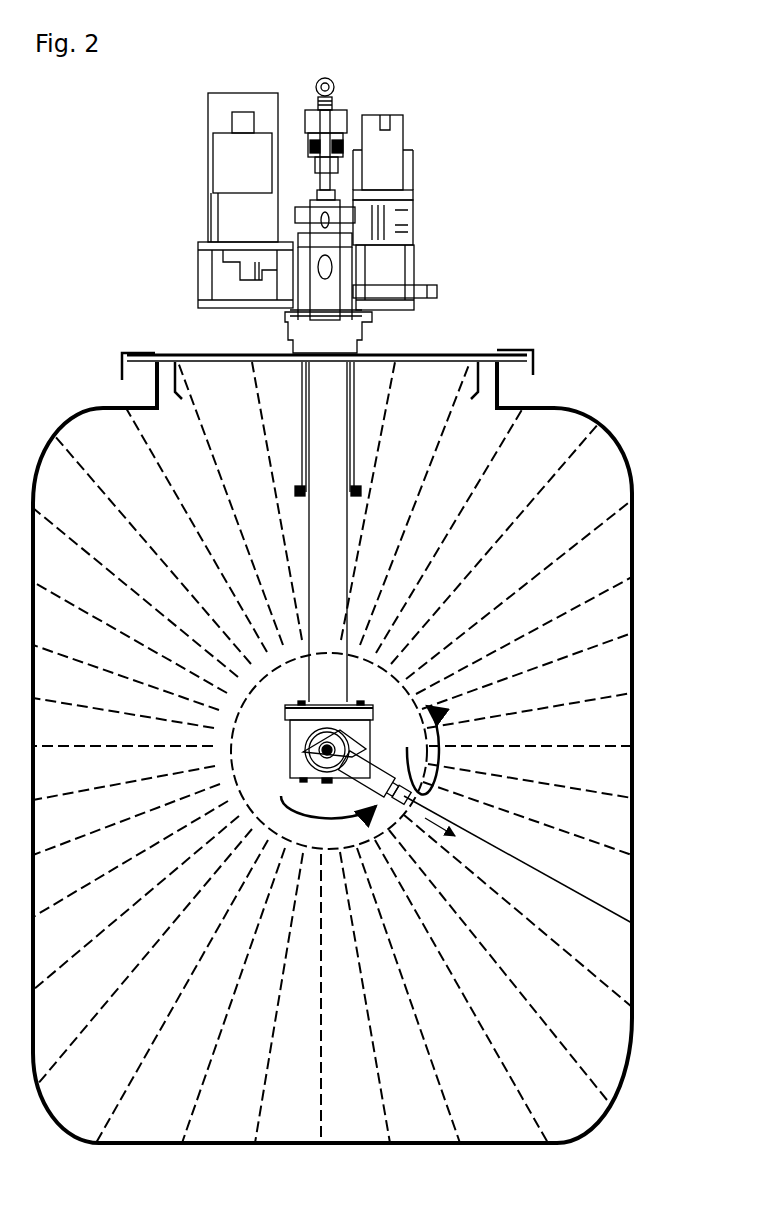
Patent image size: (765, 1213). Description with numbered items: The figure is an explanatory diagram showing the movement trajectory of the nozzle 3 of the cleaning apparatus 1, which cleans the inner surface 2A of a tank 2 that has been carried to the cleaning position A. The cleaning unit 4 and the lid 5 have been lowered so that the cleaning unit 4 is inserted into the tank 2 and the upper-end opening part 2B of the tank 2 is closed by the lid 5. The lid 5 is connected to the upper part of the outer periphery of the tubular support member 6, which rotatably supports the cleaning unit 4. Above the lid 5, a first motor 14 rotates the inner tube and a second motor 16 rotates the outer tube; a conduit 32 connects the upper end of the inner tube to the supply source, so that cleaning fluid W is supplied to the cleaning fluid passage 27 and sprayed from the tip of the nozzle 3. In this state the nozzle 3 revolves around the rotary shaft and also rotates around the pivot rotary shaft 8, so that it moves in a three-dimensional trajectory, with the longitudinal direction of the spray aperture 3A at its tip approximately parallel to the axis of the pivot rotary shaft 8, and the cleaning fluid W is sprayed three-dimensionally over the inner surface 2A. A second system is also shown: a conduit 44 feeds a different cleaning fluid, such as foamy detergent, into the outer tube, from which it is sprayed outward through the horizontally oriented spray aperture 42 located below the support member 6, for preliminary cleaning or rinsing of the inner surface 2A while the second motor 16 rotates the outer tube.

The cleaning apparatus 1 is at (495, 270).
The tank 2 is at (616, 435).
The inner surface 2A is at (615, 473).
The upper-end opening part 2B is at (497, 364).
The nozzle 3 is at (377, 775).
The spray aperture 3A is at (406, 806).
The cleaning unit 4 is at (278, 732).
The lid 5 is at (452, 358).
The tubular support member 6 is at (354, 400).
The pivot rotary shaft 8 is at (325, 751).
The first motor 14 is at (398, 143).
The second motor 16 is at (233, 167).
The cleaning fluid passage 27 is at (333, 577).
The conduit 32 is at (383, 78).
The spray aperture 42 is at (297, 492).
The conduit 44 is at (422, 288).
The cleaning position A is at (578, 343).
The cleaning fluid W is at (492, 838).